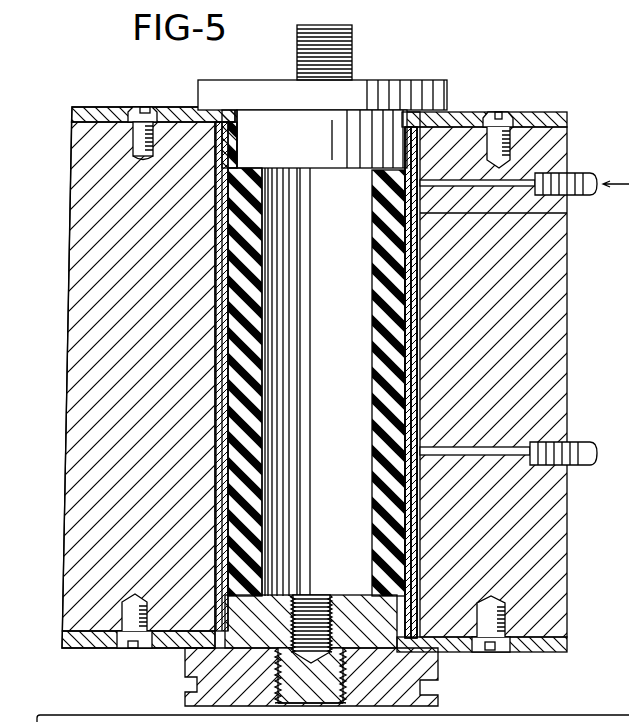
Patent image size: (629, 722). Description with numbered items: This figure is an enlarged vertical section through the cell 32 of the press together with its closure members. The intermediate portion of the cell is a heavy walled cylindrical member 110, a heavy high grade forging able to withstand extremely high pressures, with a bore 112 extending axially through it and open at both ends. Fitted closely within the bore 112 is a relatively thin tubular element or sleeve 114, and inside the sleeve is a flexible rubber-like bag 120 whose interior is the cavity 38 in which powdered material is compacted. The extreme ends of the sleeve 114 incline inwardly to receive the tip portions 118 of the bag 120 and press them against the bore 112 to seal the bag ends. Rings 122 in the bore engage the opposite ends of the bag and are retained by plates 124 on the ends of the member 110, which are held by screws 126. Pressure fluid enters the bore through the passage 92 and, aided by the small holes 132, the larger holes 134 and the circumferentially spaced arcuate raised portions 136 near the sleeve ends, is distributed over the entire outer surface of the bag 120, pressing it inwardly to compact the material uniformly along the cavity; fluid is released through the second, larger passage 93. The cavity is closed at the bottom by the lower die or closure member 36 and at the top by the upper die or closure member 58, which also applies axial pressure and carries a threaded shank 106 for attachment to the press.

The cell 32 is at (62, 130).
The lower die or closure member 36 is at (353, 597).
The cavity 38 is at (350, 344).
The upper die or closure member 58 is at (313, 148).
The passage 92 is at (517, 182).
The second passage 93 is at (507, 457).
The threaded shank 106 is at (350, 49).
The heavy walled cylindrical member 110 is at (577, 623).
The bore 112 is at (418, 348).
The tubular element or sleeve 114 is at (410, 367).
The tip portions 118 is at (223, 143).
The flexible rubber-like bag 120 is at (410, 287).
The rings 122 is at (412, 127).
The plates 124 is at (545, 115).
The screws 126 is at (508, 141).
The small holes 132 is at (628, 597).
The larger holes 134 is at (628, 584).
The arcuate raised portions 136 is at (217, 207).